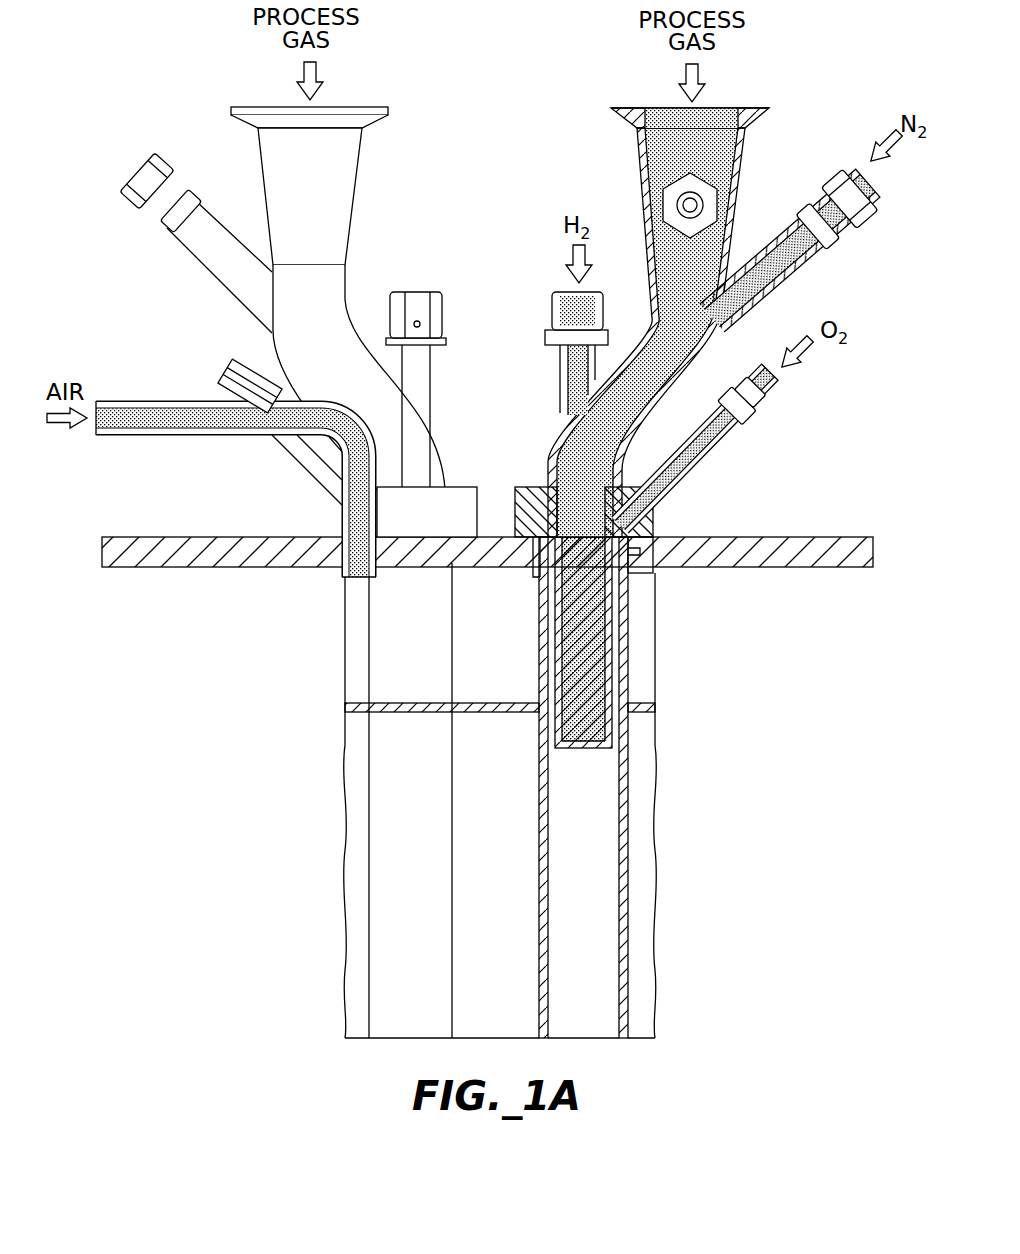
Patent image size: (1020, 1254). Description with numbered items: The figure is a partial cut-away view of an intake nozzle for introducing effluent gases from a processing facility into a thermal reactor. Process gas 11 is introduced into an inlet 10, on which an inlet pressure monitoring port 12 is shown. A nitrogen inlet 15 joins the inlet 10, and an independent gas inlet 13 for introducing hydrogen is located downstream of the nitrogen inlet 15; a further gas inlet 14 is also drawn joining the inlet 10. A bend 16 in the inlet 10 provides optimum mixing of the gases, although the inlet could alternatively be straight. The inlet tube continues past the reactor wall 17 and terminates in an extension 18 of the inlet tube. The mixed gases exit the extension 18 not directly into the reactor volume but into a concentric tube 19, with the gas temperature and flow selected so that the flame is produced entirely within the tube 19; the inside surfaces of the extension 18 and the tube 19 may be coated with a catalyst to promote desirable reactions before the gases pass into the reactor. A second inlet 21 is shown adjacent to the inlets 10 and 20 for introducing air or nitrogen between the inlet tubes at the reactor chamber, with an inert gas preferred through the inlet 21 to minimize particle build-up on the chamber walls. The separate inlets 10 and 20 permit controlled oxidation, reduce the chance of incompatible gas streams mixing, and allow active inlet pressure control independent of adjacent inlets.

The inlet 10 is at (742, 176).
The process gas 11 is at (657, 110).
The inlet pressure monitoring port 12 is at (668, 207).
The independent gas inlet 13 is at (550, 313).
The oxygen inlet tube 14 is at (757, 431).
The nitrogen inlet 15 is at (835, 232).
The bend 16 is at (703, 381).
The reactor wall 17 is at (735, 537).
The extension 18 is at (566, 645).
The concentric tube 19 is at (540, 790).
The inlet 20 is at (357, 183).
The second inlet 21 is at (165, 401).